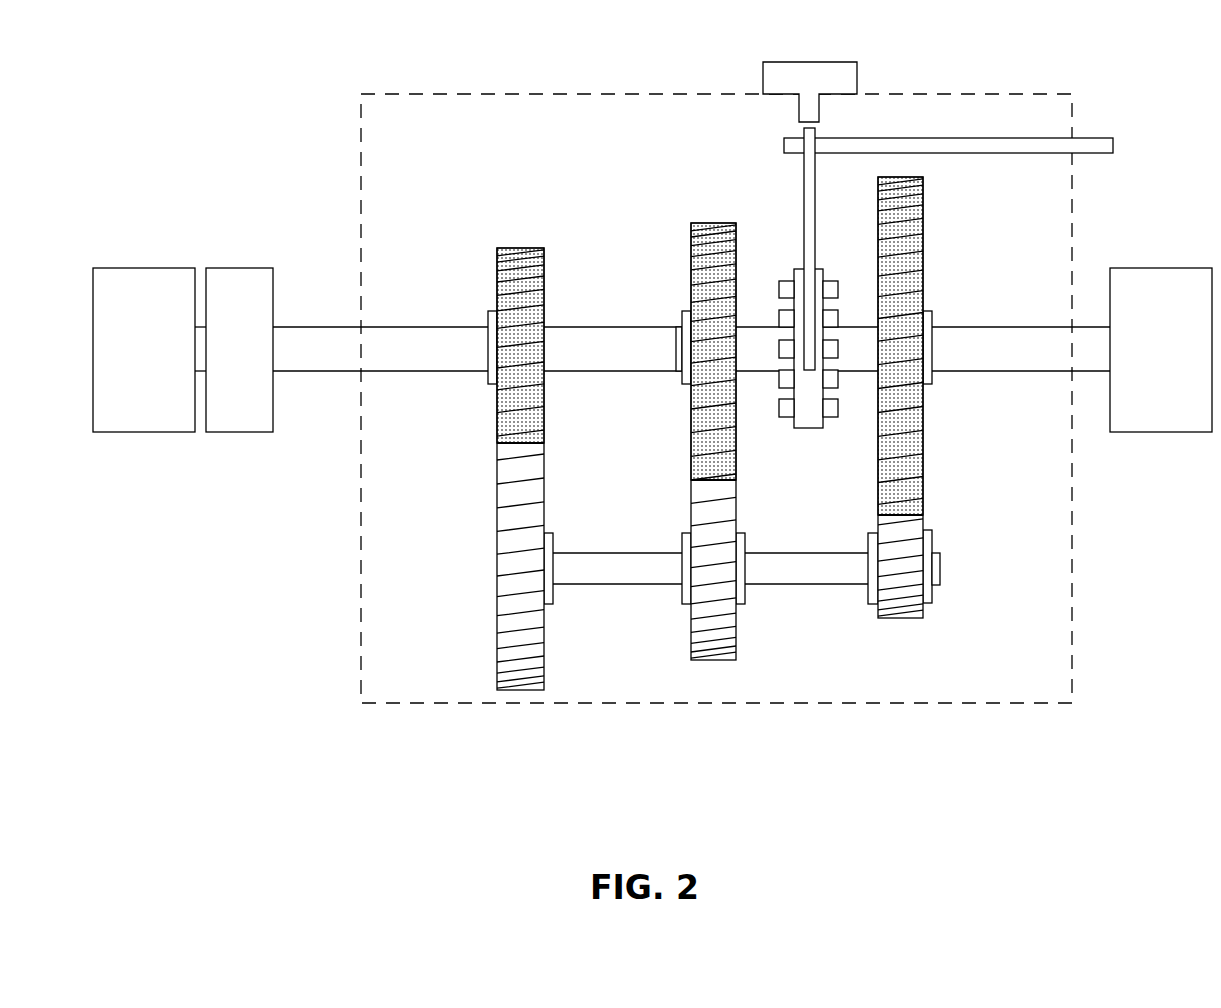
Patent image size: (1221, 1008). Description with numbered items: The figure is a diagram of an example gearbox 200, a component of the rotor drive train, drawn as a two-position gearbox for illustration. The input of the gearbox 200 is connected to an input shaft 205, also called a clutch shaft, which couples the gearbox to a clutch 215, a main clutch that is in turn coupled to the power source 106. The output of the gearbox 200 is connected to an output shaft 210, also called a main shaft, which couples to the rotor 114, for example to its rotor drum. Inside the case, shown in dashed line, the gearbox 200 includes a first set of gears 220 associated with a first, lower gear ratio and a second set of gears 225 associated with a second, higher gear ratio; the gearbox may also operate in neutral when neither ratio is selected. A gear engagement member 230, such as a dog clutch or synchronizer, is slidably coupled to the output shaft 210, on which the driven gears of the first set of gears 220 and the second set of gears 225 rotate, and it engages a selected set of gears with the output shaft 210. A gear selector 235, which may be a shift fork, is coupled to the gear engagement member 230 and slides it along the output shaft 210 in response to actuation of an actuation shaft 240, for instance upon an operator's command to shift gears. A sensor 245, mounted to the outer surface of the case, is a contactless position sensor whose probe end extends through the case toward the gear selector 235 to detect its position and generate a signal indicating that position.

The power source 106 is at (125, 360).
The rotor 114 is at (1142, 362).
The gearbox 200 is at (336, 77).
The input shaft 205 is at (432, 350).
The output shaft 210 is at (1032, 349).
The clutch 215 is at (221, 360).
The first set of gears 220 is at (678, 466).
The second set of gears 225 is at (936, 508).
The gear engagement member 230 is at (804, 418).
The gear selector 235 is at (810, 193).
The actuation shaft 240 is at (993, 144).
The sensor 245 is at (823, 72).